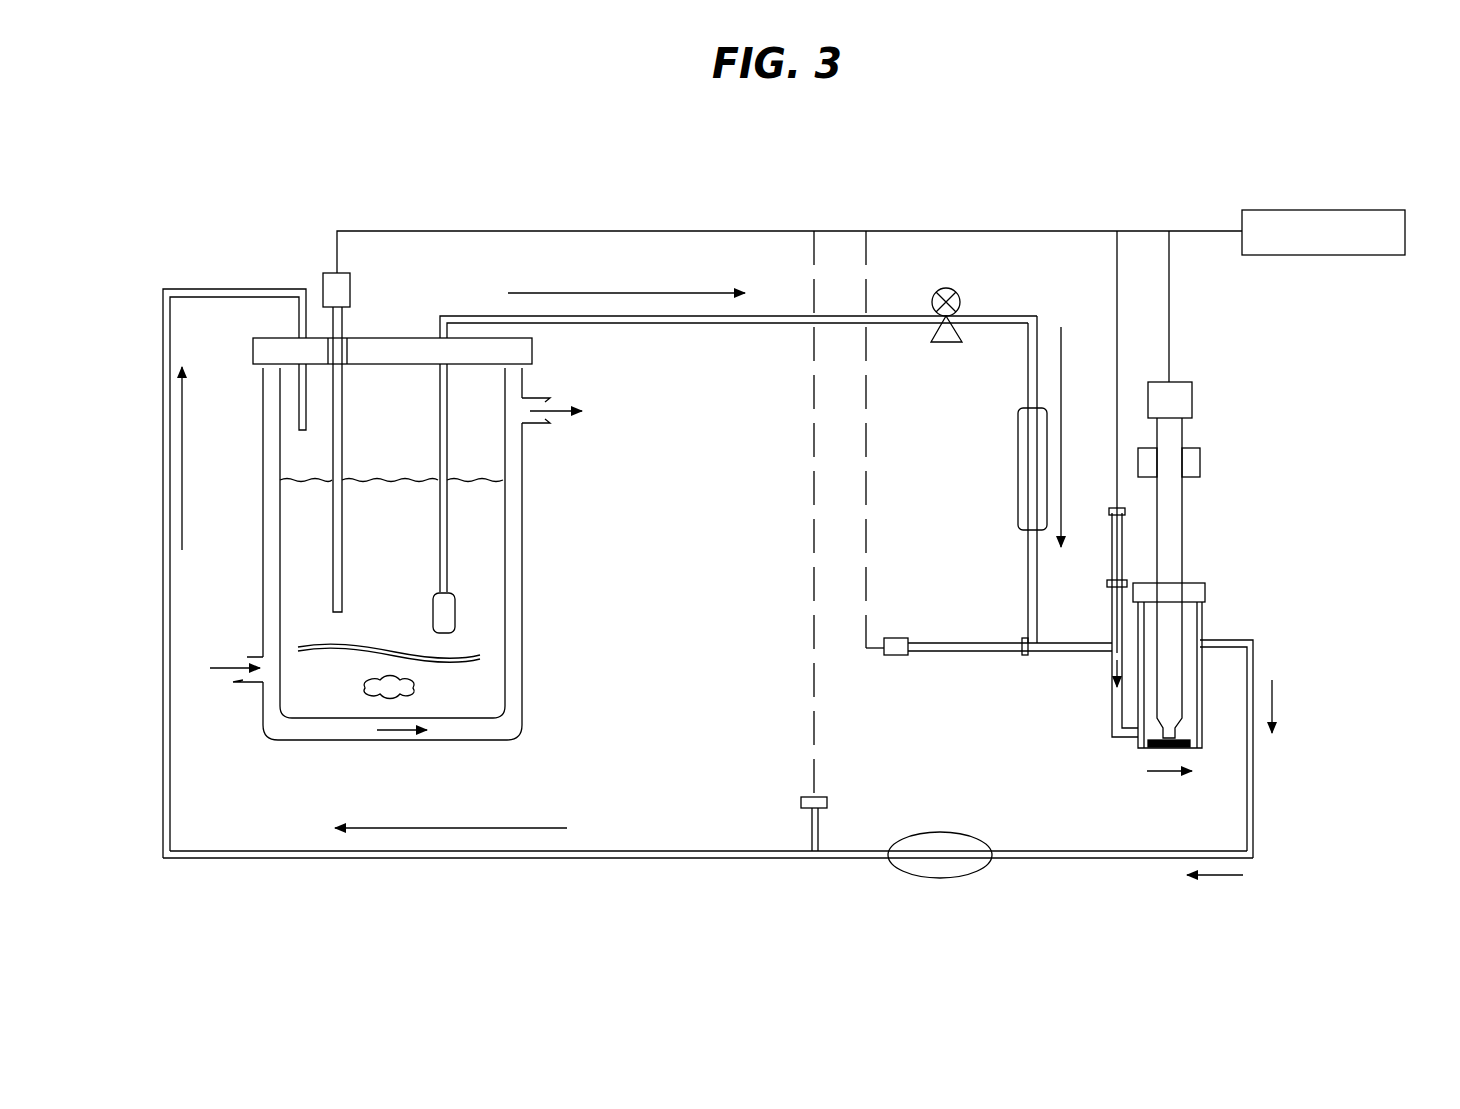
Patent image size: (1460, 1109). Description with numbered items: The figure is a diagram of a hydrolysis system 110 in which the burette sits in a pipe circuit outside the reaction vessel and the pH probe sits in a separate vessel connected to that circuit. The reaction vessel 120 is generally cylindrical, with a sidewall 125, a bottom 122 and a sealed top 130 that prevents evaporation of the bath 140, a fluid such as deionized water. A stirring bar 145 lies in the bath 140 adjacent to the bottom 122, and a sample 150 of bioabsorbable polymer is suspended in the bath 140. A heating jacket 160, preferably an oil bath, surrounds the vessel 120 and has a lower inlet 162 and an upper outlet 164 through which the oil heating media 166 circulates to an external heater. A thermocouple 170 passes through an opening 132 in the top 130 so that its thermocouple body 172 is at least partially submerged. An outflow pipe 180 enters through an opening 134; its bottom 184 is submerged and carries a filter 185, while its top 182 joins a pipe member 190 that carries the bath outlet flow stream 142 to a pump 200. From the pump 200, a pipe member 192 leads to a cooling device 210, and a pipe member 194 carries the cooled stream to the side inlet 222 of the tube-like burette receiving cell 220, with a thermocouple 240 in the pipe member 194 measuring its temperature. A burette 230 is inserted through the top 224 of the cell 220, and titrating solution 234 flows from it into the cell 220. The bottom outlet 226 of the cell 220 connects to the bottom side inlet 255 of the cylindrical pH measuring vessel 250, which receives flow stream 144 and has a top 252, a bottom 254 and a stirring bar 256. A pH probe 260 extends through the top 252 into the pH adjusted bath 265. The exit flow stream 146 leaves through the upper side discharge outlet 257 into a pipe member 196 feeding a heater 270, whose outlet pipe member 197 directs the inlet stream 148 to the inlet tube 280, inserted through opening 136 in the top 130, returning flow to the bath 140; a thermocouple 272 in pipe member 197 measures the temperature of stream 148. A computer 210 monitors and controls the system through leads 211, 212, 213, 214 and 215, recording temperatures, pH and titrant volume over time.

The hydrolysis system 110 is at (723, 155).
The reaction vessel 120 is at (466, 554).
The bottom 122 is at (421, 772).
The sidewall 125 is at (177, 566).
The sealed top 130 is at (362, 427).
The opening 132 is at (321, 237).
The opening 134 is at (455, 260).
The opening 136 is at (260, 287).
The bath 140 is at (296, 555).
The bath outlet flow stream 142 is at (805, 396).
The flow stream 144 is at (1160, 809).
The stirring bar 145 is at (495, 705).
The exit flow stream 146 is at (1291, 811).
The inlet stream flow stream 148 is at (338, 573).
The sample 150 is at (354, 731).
The heating jacket 160 is at (454, 543).
The lower inlet 162 is at (220, 647).
The upper outlet 164 is at (591, 386).
The oil heating media 166 is at (411, 590).
The thermocouple 170 is at (384, 347).
The thermocouple body 172 is at (262, 490).
The outflow pipe 180 is at (398, 478).
The top 182 is at (427, 346).
The bottom 184 is at (533, 608).
The filter 185 is at (540, 641).
The pipe member 190 is at (738, 252).
The pipe member 192 is at (1033, 444).
The pipe member 194 is at (1010, 617).
The pipe member 196 is at (1208, 788).
The pipe member 197 is at (708, 893).
The pump 200 is at (945, 256).
The cooling device 210 is at (1175, 331).
The lead 211 is at (789, 191).
The lead 212 is at (1232, 306).
The lead 213 is at (1097, 402).
The lead 214 is at (749, 514).
The lead 215 is at (920, 439).
The burette receiving cell 220 is at (1089, 622).
The side inlet 222 is at (1058, 668).
The top 224 is at (1084, 569).
The bottom outlet 226 is at (1061, 737).
The burette 230 is at (1190, 560).
The titrating solution 234 is at (1067, 690).
The thermocouple 240 is at (906, 595).
The pH measuring vessel 250 is at (1248, 670).
The top 252 is at (1260, 554).
The bottom 254 is at (1215, 792).
The bottom side inlet 255 is at (1080, 757).
The stirring bar 256 is at (1109, 777).
The upper side discharge outlet 257 is at (1283, 641).
The pH probe 260 is at (1262, 745).
The pH adjusted bath 265 is at (1229, 582).
The heater 270 is at (912, 886).
The thermocouple 272 is at (762, 862).
The inlet tube 280 is at (191, 350).